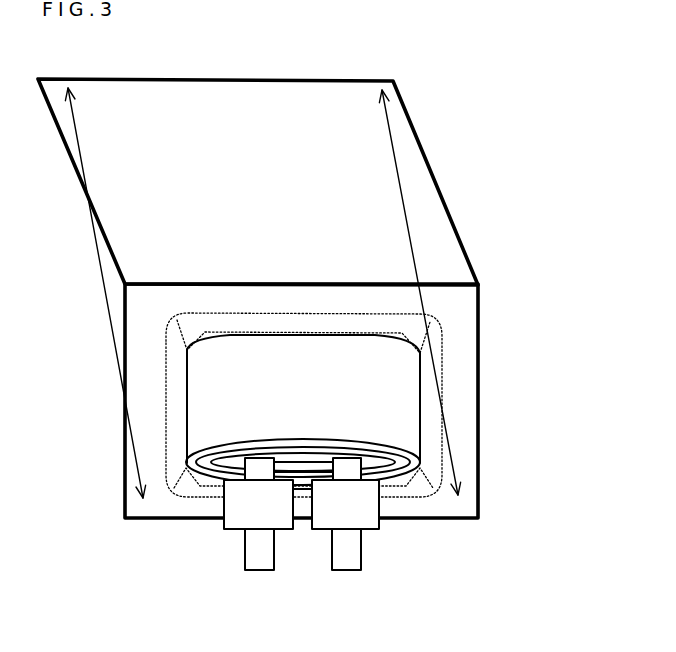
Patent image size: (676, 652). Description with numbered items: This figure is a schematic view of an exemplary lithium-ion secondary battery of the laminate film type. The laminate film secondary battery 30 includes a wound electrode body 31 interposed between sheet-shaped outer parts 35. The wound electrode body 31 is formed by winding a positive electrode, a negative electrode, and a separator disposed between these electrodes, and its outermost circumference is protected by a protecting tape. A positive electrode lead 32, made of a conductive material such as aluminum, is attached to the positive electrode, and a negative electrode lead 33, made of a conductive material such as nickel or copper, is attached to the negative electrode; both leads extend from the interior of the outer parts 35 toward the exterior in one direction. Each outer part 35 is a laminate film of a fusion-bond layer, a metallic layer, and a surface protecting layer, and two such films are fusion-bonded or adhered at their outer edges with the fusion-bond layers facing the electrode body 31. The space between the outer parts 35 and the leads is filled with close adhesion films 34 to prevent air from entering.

The laminate film secondary battery 30 is at (310, 330).
The wound electrode body 31 is at (380, 391).
The positive electrode lead 32 is at (255, 556).
The negative electrode lead 33 is at (345, 556).
The close adhesion film 34 is at (367, 510).
The outer part 35 is at (320, 188).